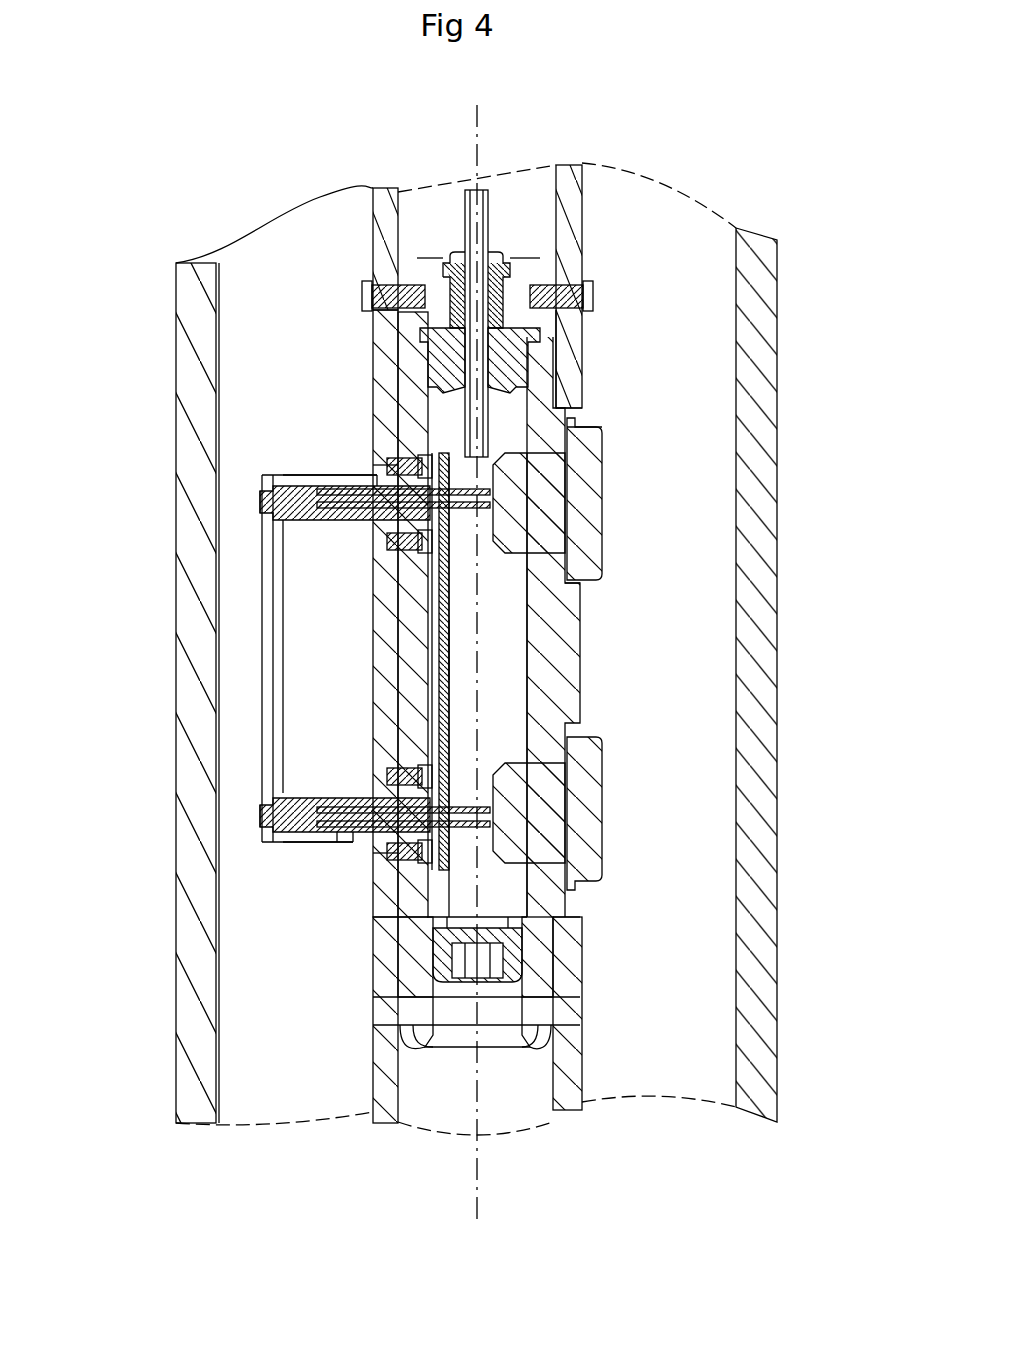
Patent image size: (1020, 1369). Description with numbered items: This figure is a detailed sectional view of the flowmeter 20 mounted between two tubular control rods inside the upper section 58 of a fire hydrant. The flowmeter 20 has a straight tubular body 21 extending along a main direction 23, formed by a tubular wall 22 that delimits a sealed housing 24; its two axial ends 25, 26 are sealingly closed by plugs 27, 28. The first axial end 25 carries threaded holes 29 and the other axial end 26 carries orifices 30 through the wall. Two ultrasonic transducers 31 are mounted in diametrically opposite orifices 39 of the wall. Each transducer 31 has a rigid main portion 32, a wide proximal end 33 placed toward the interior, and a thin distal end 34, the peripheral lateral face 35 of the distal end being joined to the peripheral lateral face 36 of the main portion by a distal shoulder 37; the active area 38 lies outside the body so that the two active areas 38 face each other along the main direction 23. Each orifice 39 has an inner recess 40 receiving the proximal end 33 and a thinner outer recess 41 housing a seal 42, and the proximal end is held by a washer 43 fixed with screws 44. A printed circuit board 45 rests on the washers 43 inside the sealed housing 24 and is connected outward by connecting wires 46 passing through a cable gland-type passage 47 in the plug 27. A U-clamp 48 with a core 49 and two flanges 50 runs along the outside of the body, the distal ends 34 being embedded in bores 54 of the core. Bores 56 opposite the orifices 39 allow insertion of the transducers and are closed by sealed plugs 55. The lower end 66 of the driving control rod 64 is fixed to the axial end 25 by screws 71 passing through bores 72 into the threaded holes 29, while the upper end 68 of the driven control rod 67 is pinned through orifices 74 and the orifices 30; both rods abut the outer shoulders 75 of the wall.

The flowmeter 20 is at (580, 722).
The tubular body 21 is at (583, 598).
The tubular wall 22 is at (563, 665).
The main direction 23 is at (477, 1172).
The sealed housing 24 is at (507, 698).
The first axial end 25 is at (410, 323).
The second axial end 26 is at (410, 958).
The plug 27 is at (450, 257).
The plug 28 is at (505, 955).
The threaded holes 29 is at (417, 257).
The orifices 30 is at (415, 1040).
The ultrasonic transducer 31 is at (350, 475).
The main portion 32 is at (323, 485).
The proximal end 33 is at (378, 465).
The distal end 34 is at (260, 498).
The peripheral lateral face of the distal end 35 is at (285, 483).
The peripheral lateral face of the main portion 36 is at (350, 475).
The distal shoulder 37 is at (300, 475).
The active area 38 is at (330, 495).
The orifices 39 is at (385, 518).
The inner recess 40 is at (387, 548).
The outer recess 41 is at (450, 532).
The seal 42 is at (470, 510).
The washer 43 is at (432, 585).
The screws 44 is at (437, 413).
The printed circuit board 45 is at (450, 663).
The connecting wires 46 is at (587, 440).
The cable gland-type passage 47 is at (505, 262).
The U-clamp 48 is at (448, 632).
The core 49 is at (448, 663).
The flanges 50 is at (337, 843).
The bores 54 is at (273, 518).
The sealed plugs 55 is at (585, 480).
The bores 56 is at (582, 413).
The upper section 58 is at (780, 330).
The driving control rod 64 is at (583, 180).
The lower end of the driving control rod 66 is at (582, 350).
The driven control rod 67 is at (585, 1102).
The upper end of the driven control rod 68 is at (560, 955).
The screws 71 is at (362, 295).
The bores 72 is at (398, 257).
The orifices 74 is at (410, 1010).
The outer shoulder 75 is at (582, 397).